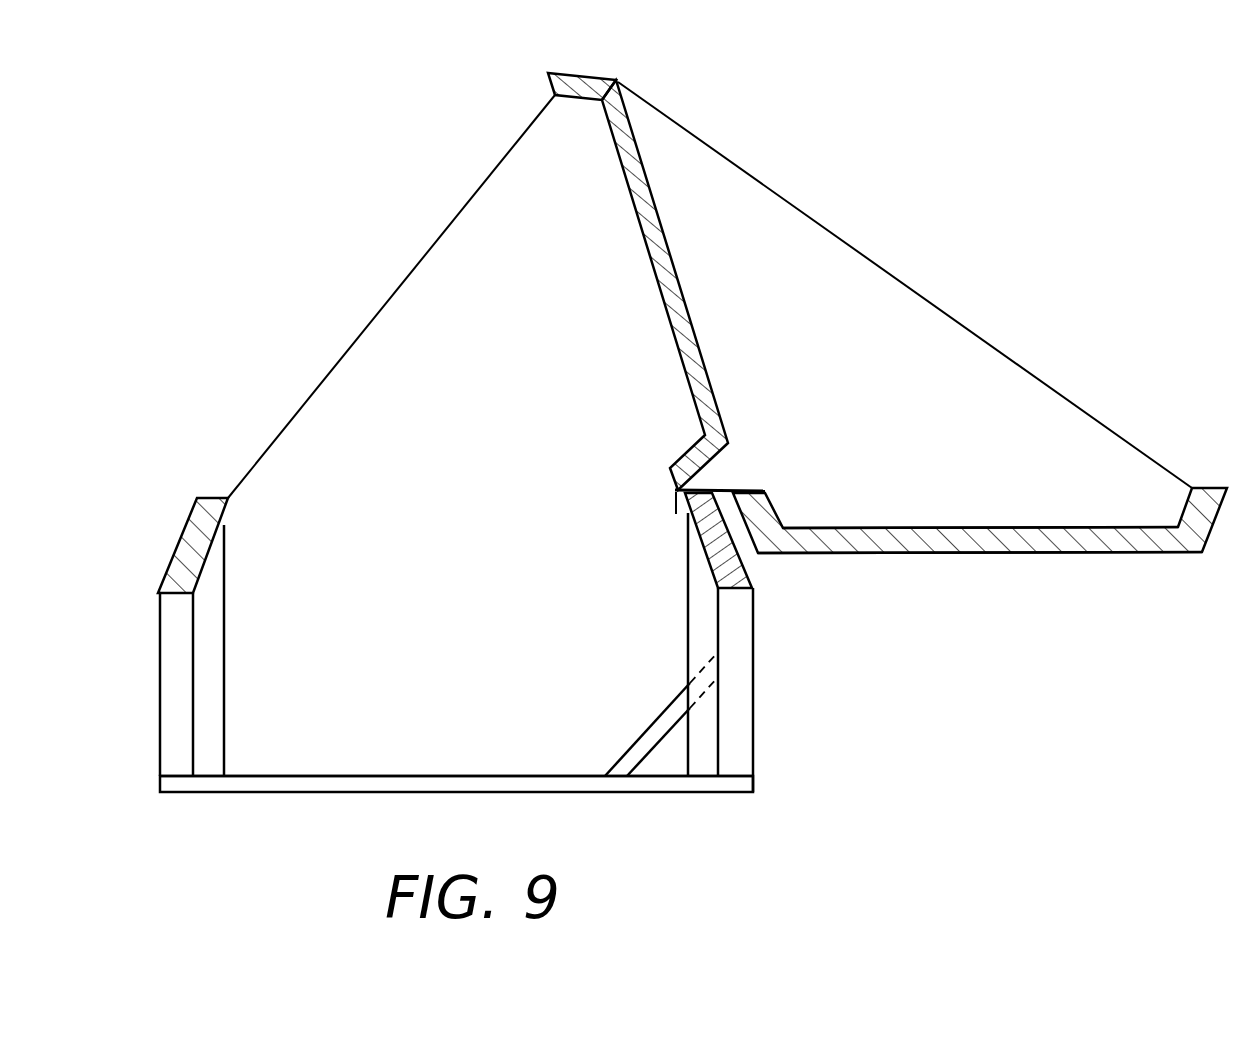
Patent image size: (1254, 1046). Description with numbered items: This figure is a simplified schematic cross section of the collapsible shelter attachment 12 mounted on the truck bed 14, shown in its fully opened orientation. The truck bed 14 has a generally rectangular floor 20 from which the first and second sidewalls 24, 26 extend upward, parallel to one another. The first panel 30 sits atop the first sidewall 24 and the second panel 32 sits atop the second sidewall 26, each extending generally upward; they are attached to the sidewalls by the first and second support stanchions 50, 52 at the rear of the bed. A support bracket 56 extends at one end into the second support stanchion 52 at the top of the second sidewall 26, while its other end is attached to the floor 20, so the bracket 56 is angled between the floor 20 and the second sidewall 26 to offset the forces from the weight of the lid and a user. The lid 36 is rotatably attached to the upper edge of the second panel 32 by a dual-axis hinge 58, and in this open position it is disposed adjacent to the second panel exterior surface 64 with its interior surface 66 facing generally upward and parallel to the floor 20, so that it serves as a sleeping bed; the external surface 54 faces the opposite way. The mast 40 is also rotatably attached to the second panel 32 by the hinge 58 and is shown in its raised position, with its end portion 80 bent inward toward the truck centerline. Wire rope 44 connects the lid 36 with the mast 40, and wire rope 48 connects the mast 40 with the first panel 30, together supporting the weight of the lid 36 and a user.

The collapsible shelter attachment 12 is at (837, 127).
The truck bed 14 is at (410, 768).
The floor 20 is at (330, 778).
The first sidewall 24 is at (168, 655).
The second sidewall 26 is at (748, 722).
The first panel 30 is at (185, 525).
The second panel 32 is at (743, 580).
The lid 36 is at (860, 528).
The mast 40 is at (652, 268).
The wire rope 44 is at (882, 270).
The wire rope 48 is at (402, 280).
The first support stanchion 50 is at (212, 677).
The second support stanchion 52 is at (707, 765).
The external surface of the lid 54 is at (1048, 552).
The support bracket 56 is at (630, 750).
The dual-axis hinge 58 is at (720, 490).
The second panel exterior surface 64 is at (740, 550).
The lid interior surface 66 is at (1022, 528).
The end portion 80 is at (590, 78).